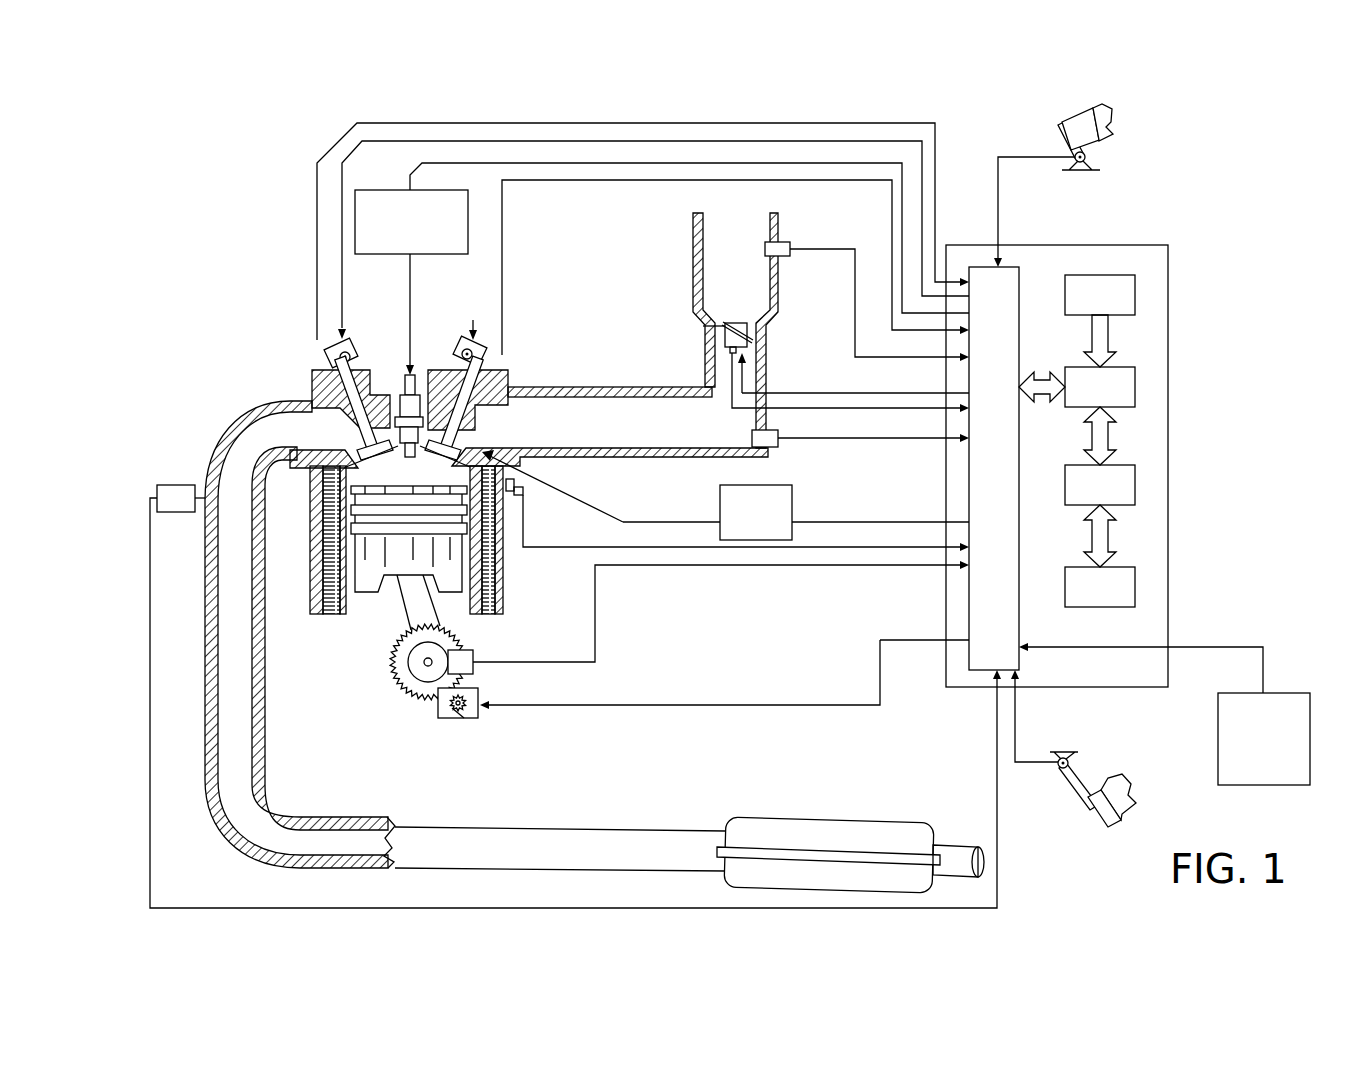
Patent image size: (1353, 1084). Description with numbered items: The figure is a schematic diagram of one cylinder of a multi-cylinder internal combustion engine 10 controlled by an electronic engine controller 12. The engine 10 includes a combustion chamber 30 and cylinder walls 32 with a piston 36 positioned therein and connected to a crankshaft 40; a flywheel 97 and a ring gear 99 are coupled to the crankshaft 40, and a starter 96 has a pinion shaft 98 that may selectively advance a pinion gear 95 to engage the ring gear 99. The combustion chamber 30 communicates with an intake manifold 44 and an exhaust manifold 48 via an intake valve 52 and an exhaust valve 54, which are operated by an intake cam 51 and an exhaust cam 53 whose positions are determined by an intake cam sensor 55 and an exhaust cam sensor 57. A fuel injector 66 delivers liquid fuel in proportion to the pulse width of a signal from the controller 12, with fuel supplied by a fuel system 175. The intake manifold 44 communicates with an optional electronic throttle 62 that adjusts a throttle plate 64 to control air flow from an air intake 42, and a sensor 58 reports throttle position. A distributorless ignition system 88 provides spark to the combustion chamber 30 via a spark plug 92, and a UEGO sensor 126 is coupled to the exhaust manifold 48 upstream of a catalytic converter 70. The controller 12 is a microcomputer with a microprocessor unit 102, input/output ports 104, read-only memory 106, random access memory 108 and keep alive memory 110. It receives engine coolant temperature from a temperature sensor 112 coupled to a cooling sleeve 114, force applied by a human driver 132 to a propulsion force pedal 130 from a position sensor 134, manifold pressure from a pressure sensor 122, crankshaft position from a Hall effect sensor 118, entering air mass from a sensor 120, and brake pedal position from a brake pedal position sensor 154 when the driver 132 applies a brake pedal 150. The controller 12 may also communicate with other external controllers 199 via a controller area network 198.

The internal combustion engine 10 is at (244, 322).
The electronic engine controller 12 is at (1160, 247).
The combustion chamber 30 is at (405, 464).
The cylinder walls 32 is at (348, 598).
The piston 36 is at (393, 565).
The crankshaft 40 is at (415, 690).
The air intake 42 is at (735, 330).
The intake manifold 44 is at (610, 426).
The exhaust manifold 48 is at (465, 636).
The intake cam 51 is at (462, 347).
The intake valve 52 is at (452, 434).
The exhaust cam 53 is at (353, 342).
The exhaust valve 54 is at (357, 428).
The intake cam sensor 55 is at (483, 362).
The exhaust cam sensor 57 is at (330, 357).
The throttle position sensor 58 is at (722, 350).
The electronic throttle 62 is at (760, 335).
The throttle plate 64 is at (720, 330).
The fuel injector 66 is at (492, 456).
The catalytic converter 70 is at (780, 820).
The distributorless ignition system 88 is at (369, 190).
The spark plug 92 is at (412, 374).
The pinion gear 95 is at (465, 713).
The starter 96 is at (478, 718).
The flywheel 97 is at (410, 660).
The pinion shaft 98 is at (452, 716).
The ring gear 99 is at (425, 702).
The microprocessor unit 102 is at (1135, 390).
The input/output ports 104 is at (1022, 275).
The read-only memory 106 is at (1135, 295).
The random access memory 108 is at (1135, 487).
The keep alive memory 110 is at (1135, 585).
The temperature sensor 112 is at (520, 497).
The cooling sleeve 114 is at (487, 567).
The Hall effect sensor 118 is at (476, 658).
The air mass sensor 120 is at (795, 246).
The pressure sensor 122 is at (776, 449).
The Universal Exhaust Gas Oxygen sensor 126 is at (157, 487).
The propulsion force pedal 130 is at (1060, 128).
The human driver 132 is at (1112, 120).
The position sensor 134 is at (1100, 160).
The brake pedal 150 is at (1090, 808).
The brake pedal position sensor 154 is at (1052, 760).
The fuel system 175 is at (796, 512).
The controller area network 198 is at (1205, 648).
The external controllers 199 is at (1264, 739).